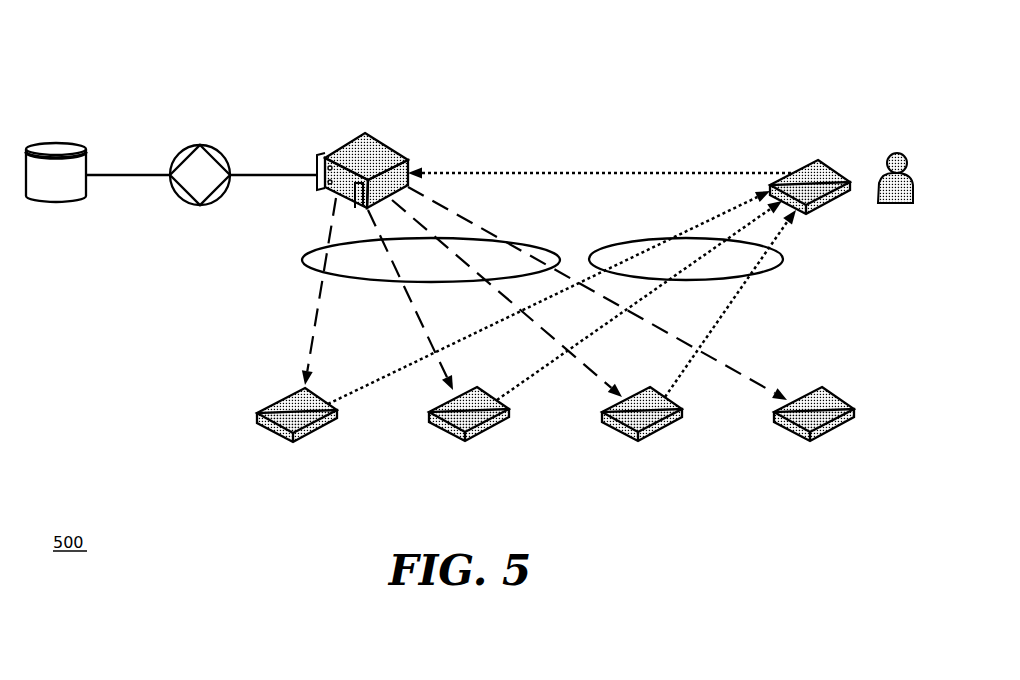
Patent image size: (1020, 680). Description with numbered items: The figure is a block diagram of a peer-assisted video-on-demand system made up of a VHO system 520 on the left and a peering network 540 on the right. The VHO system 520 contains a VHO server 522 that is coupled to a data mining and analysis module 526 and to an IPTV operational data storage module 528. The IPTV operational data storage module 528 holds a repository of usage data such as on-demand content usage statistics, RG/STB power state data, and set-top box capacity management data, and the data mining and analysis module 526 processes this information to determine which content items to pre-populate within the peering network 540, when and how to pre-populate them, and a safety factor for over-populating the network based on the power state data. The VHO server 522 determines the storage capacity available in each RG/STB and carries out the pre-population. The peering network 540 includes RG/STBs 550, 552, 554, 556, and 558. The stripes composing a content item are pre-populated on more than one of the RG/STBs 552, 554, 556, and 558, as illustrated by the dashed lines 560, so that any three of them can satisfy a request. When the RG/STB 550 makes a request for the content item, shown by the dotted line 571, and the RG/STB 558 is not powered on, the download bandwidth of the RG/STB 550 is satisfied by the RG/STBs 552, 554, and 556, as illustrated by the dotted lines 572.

The VHO system 520 is at (161, 45).
The peering network 540 is at (735, 45).
The VHO server 522 is at (383, 142).
The data mining and analysis module 526 is at (200, 146).
The IPTV operational data storage module 528 is at (58, 143).
The RG/STB 550 is at (826, 158).
The RG/STB 552 is at (310, 433).
The RG/STB 554 is at (482, 432).
The RG/STB 556 is at (655, 432).
The RG/STB 558 is at (827, 432).
The dashed lines 560 is at (302, 260).
The dotted line 571 is at (575, 172).
The dotted lines 572 is at (783, 260).